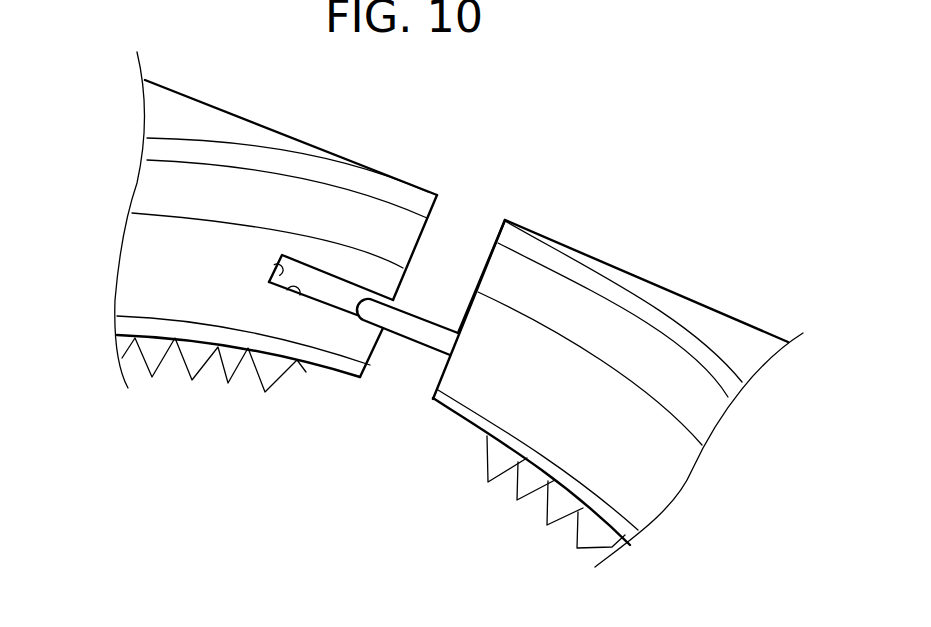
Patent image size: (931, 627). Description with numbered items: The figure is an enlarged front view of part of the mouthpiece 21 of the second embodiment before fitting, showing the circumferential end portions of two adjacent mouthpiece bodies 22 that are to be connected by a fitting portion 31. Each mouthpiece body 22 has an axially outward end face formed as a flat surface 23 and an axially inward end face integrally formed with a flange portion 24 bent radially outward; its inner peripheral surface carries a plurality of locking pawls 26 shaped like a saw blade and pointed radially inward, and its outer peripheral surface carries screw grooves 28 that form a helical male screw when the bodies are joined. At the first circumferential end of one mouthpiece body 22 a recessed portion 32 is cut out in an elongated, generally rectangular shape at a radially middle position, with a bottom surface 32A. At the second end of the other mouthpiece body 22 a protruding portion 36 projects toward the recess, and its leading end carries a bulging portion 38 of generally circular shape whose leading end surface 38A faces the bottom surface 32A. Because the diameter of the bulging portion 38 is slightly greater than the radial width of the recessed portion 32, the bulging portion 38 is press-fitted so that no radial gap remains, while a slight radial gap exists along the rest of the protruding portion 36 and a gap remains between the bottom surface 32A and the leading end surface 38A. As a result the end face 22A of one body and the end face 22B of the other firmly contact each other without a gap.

The mouthpiece 21 is at (549, 196).
The mouthpiece body 22 is at (142, 264).
The end face 22A is at (412, 292).
The end face 22B is at (468, 308).
The flat surface 23 is at (138, 290).
The flange portion 24 is at (194, 124).
The locking pawl 26 is at (152, 377).
The screw groove 28 is at (258, 160).
The fitting portion 31 is at (390, 390).
The recessed portion 32 is at (285, 292).
The bottom surface 32A is at (275, 268).
The protruding portion 36 is at (413, 342).
The bulging portion 38 is at (368, 298).
The leading end surface 38A is at (356, 296).